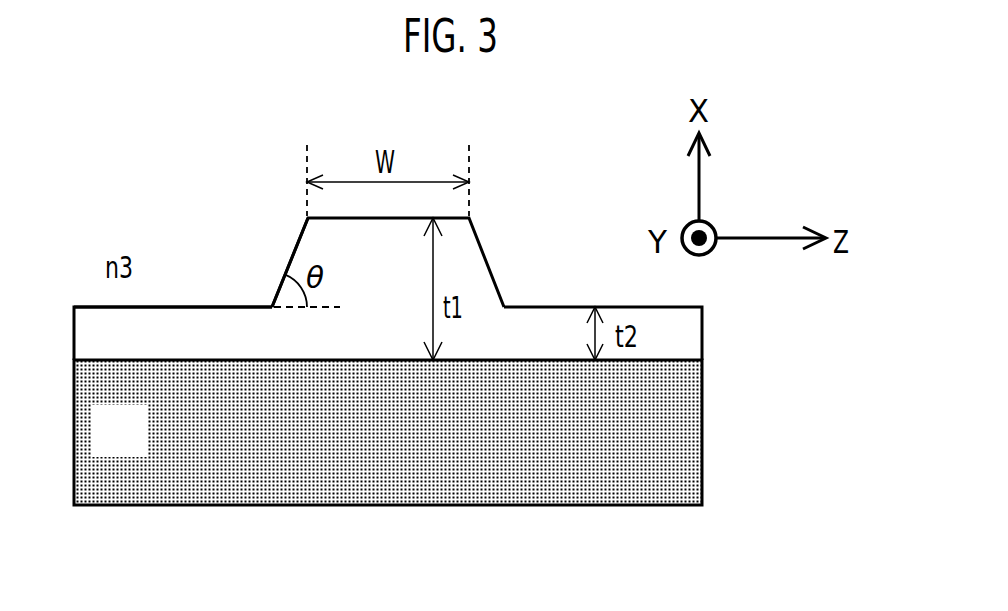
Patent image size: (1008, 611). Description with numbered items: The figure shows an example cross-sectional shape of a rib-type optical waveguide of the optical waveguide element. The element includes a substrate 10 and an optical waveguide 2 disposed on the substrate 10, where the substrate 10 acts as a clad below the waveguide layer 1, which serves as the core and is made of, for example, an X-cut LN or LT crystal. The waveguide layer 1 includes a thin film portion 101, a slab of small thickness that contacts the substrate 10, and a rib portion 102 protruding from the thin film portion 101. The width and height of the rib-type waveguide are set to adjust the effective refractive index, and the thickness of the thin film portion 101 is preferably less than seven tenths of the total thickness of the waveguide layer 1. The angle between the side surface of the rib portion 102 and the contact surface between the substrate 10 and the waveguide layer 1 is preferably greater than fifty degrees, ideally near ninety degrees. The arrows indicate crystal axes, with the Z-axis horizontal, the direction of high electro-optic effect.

The waveguide layer 1 is at (677, 343).
The optical waveguide 2 is at (485, 232).
The substrate 10 is at (677, 460).
The thin film portion 101 is at (268, 327).
The rib portion 102 is at (318, 252).